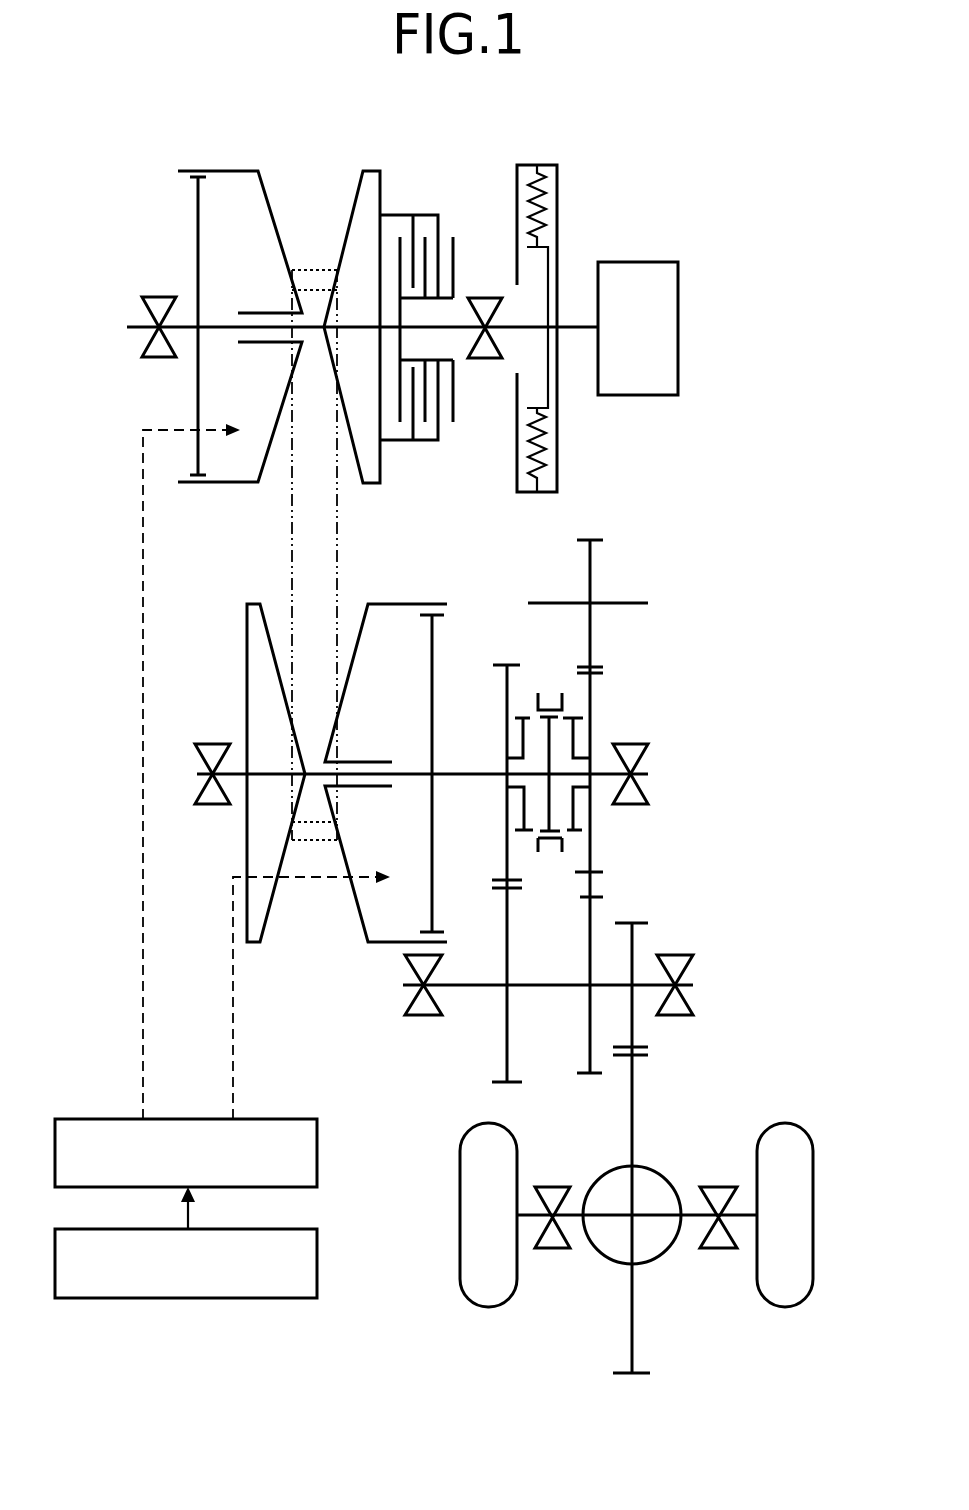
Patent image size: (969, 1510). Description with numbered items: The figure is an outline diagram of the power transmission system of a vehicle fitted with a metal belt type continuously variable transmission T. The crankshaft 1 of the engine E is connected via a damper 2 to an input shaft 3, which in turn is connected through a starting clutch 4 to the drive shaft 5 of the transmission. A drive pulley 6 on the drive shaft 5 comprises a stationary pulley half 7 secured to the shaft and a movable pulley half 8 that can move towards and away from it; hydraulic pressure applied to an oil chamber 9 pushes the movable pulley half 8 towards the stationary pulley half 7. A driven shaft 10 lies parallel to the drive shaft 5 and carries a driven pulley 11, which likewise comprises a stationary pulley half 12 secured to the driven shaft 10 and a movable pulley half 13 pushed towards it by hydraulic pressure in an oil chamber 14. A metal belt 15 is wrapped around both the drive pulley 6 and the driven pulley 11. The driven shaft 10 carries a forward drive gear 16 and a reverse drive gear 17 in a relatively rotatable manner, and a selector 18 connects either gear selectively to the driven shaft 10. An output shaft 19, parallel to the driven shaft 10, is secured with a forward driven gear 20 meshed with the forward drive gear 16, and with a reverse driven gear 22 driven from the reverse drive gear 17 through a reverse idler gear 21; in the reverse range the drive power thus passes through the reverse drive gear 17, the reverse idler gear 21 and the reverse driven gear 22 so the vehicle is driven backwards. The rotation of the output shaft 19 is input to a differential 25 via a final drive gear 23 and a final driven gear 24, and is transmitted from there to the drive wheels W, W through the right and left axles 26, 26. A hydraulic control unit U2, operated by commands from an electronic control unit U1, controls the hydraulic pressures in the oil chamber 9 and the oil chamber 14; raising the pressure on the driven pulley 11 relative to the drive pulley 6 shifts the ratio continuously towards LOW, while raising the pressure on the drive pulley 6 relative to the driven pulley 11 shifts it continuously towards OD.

The crankshaft 1 is at (573, 333).
The damper 2 is at (572, 206).
The input shaft 3 is at (508, 325).
The starting clutch 4 is at (430, 203).
The drive shaft 5 is at (215, 327).
The drive pulley 6 is at (305, 218).
The stationary pulley half 7 is at (363, 203).
The movable pulley half 8 is at (267, 205).
The oil chamber 9 is at (247, 401).
The driven shaft 10 is at (485, 774).
The driven pulley 11 is at (322, 933).
The stationary pulley half 12 is at (248, 643).
The movable pulley half 13 is at (357, 653).
The oil chamber 14 is at (420, 861).
The metal belt 15 is at (338, 560).
The forward drive gear 16 is at (515, 663).
The reverse drive gear 17 is at (600, 680).
The selector 18 is at (547, 853).
The output shaft 19 is at (535, 983).
The forward driven gear 20 is at (515, 1084).
The reverse idler gear 21 is at (600, 542).
The reverse driven gear 22 is at (582, 1076).
The final drive gear 23 is at (642, 917).
The final driven gear 24 is at (640, 1060).
The differential 25 is at (663, 1169).
The axle 26 is at (568, 1217).
The engine E is at (650, 346).
The metal belt type continuously variable transmission T is at (232, 545).
The drive wheel W is at (458, 1273).
The electronic control unit U1 is at (317, 1272).
The hydraulic control unit U2 is at (317, 1153).